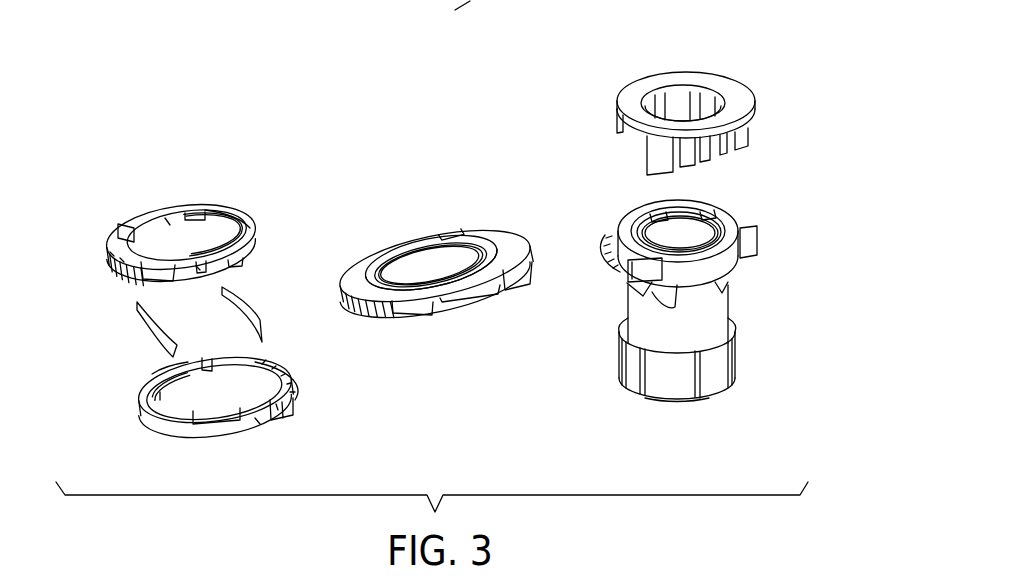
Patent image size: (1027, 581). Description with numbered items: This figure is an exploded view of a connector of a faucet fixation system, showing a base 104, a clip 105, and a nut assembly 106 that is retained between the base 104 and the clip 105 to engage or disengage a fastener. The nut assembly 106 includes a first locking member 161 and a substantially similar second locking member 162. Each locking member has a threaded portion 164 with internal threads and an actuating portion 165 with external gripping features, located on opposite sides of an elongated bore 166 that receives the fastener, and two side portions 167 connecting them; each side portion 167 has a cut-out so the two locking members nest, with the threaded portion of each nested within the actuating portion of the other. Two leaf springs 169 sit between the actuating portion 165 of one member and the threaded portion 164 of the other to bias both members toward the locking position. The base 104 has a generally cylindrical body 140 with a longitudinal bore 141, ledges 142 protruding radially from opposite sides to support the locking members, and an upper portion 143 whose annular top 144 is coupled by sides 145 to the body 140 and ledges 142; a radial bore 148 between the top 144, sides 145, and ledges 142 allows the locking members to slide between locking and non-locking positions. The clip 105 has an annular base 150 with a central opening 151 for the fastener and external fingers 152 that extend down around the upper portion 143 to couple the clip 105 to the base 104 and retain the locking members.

The base 104 is at (578, 353).
The clip 105 is at (768, 108).
The nut assembly 106 is at (105, 387).
The body 140 is at (708, 323).
The longitudinal bore 141 is at (675, 417).
The ledges 142 is at (647, 293).
The upper portion 143 is at (588, 212).
The annular top 144 is at (637, 222).
The sides 145 is at (690, 275).
The radial bore 148 is at (768, 237).
The annular base 150 is at (720, 70).
The central opening 151 is at (680, 110).
The external fingers 152 is at (723, 150).
The first locking member 161 is at (177, 203).
The second locking member 162 is at (233, 433).
The threaded portion 164 is at (242, 212).
The actuating portion 165 is at (108, 260).
The bore 166 is at (175, 242).
The side portions 167 is at (167, 217).
The springs 169 is at (148, 335).